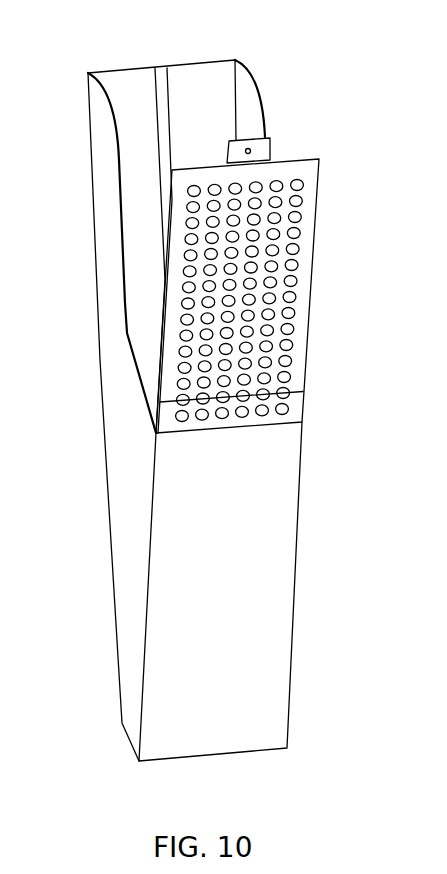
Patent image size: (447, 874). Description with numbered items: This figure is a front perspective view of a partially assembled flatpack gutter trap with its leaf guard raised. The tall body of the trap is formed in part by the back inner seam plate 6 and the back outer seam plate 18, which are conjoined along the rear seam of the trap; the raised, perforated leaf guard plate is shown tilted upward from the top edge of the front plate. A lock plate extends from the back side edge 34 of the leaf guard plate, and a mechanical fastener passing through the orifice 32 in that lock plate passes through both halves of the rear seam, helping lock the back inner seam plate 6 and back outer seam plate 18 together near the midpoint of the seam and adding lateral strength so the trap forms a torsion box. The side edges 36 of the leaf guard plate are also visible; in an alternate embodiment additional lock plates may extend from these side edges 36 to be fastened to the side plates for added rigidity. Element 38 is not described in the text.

The back inner seam plate 6 is at (201, 75).
The back outer seam plate 18 is at (127, 83).
The orifice 32 is at (252, 152).
The back side edge 34 is at (295, 160).
The side edges 36 is at (313, 273).
The recess side wall 38 is at (163, 330).